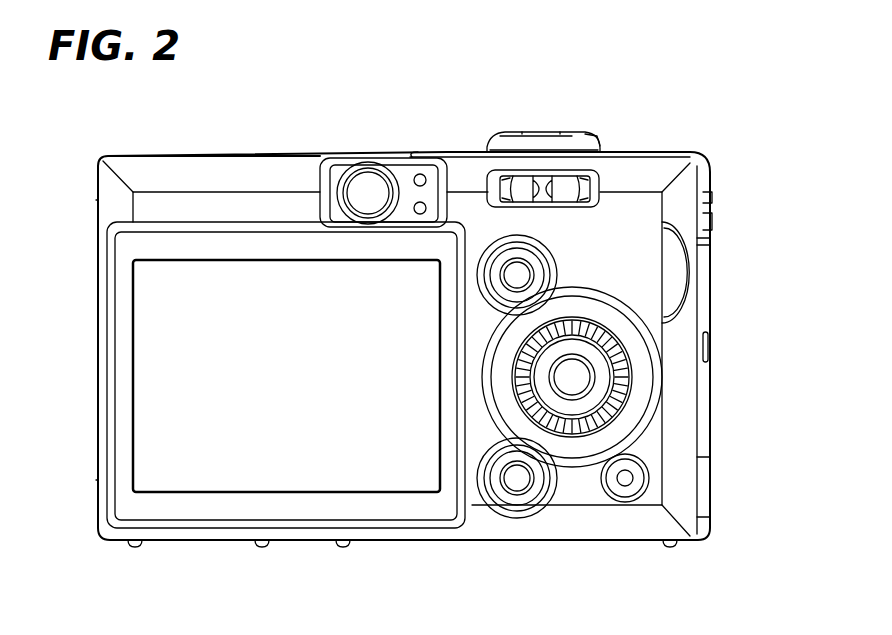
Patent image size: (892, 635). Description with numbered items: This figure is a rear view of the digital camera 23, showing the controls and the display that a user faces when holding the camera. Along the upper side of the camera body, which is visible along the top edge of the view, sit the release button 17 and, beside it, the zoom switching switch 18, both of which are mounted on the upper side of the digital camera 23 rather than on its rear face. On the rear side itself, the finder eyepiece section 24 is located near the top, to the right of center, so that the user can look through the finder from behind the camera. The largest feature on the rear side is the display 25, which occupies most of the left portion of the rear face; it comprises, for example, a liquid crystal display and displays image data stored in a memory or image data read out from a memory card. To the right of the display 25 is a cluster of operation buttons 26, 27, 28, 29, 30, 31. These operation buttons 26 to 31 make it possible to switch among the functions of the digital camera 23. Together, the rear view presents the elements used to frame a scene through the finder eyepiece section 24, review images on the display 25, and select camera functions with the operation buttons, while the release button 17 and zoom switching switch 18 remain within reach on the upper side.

The digital camera 23 is at (203, 145).
The finder eyepiece section 24 is at (368, 180).
The release button 17 is at (541, 130).
The zoom switching switch 18 is at (588, 142).
The operation button 26 is at (572, 182).
The display 25 is at (356, 480).
The operation button 27 is at (525, 273).
The operation button 28 is at (572, 382).
The operation button 31 is at (613, 402).
The operation button 29 is at (517, 482).
The operation button 30 is at (625, 482).